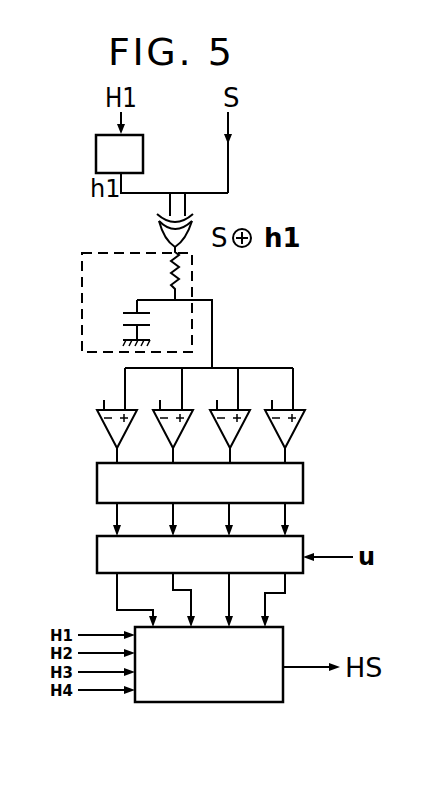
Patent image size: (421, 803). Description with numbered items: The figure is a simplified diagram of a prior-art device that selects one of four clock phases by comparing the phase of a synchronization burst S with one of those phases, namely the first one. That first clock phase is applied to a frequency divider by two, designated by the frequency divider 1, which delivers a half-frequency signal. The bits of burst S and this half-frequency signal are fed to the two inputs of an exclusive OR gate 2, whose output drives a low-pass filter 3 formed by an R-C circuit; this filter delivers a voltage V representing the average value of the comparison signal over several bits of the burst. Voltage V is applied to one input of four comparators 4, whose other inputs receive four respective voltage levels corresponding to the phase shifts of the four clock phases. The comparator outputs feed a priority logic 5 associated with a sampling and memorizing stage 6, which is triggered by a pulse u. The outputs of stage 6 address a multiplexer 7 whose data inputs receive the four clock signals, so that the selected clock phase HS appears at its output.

The frequency divider by 2 1 is at (96, 152).
The exclusive OR gate 2 is at (162, 237).
The low-pass filter 3 is at (82, 281).
The comparators 4 is at (110, 428).
The priority logic 5 is at (297, 483).
The sampling and memorizing stage 6 is at (99, 557).
The multiplexer 7 is at (260, 692).